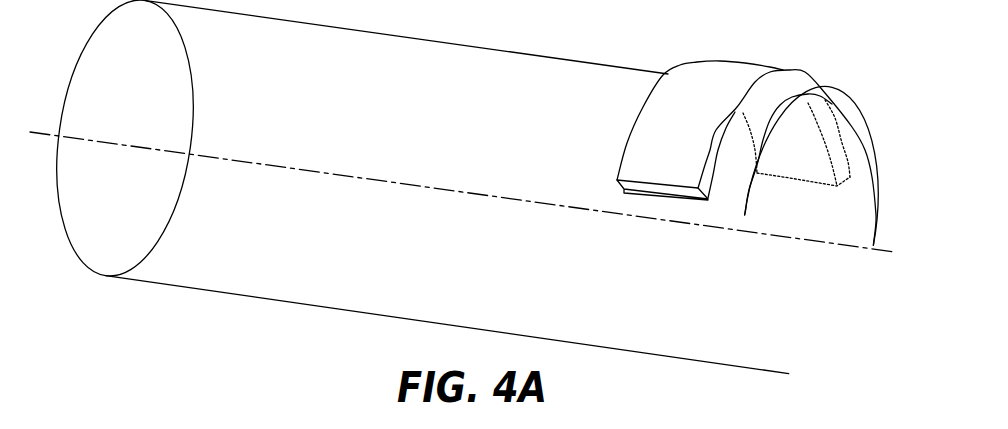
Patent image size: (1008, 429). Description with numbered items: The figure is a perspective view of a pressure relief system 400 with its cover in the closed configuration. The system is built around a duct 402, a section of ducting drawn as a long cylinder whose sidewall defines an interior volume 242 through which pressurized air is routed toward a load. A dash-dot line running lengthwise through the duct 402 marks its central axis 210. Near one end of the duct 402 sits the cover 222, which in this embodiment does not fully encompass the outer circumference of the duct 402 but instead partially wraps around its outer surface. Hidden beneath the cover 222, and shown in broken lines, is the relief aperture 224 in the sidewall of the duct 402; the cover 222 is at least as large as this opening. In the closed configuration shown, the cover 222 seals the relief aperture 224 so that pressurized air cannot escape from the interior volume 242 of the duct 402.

The pressure relief system 400 is at (541, 34).
The duct 402 is at (257, 278).
The central axis 210 is at (147, 147).
The interior volume 242 is at (472, 235).
The cover 222 is at (757, 66).
The relief aperture 224 is at (792, 167).